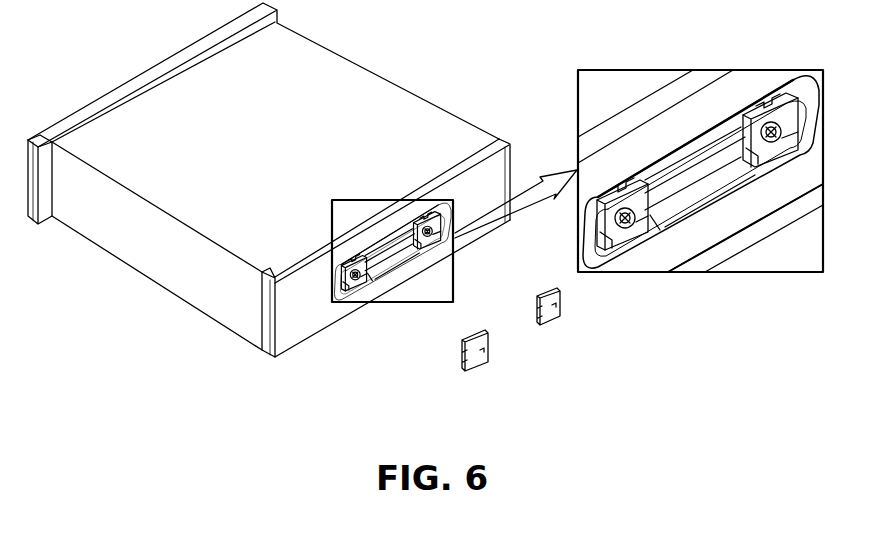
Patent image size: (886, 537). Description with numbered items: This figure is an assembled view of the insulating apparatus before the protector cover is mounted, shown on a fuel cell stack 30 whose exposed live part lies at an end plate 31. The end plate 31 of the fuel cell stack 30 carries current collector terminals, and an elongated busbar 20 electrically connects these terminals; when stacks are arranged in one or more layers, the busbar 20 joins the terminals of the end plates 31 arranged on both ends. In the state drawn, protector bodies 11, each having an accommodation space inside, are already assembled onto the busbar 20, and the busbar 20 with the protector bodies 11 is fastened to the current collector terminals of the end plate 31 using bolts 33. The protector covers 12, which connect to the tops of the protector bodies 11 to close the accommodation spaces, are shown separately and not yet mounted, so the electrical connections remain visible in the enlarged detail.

The protector body 11 is at (765, 98).
The protector cover 12 is at (553, 320).
The busbar 20 is at (688, 178).
The fuel cell stack 30 is at (374, 325).
The end plate 31 is at (33, 210).
The bolt 33 is at (743, 112).